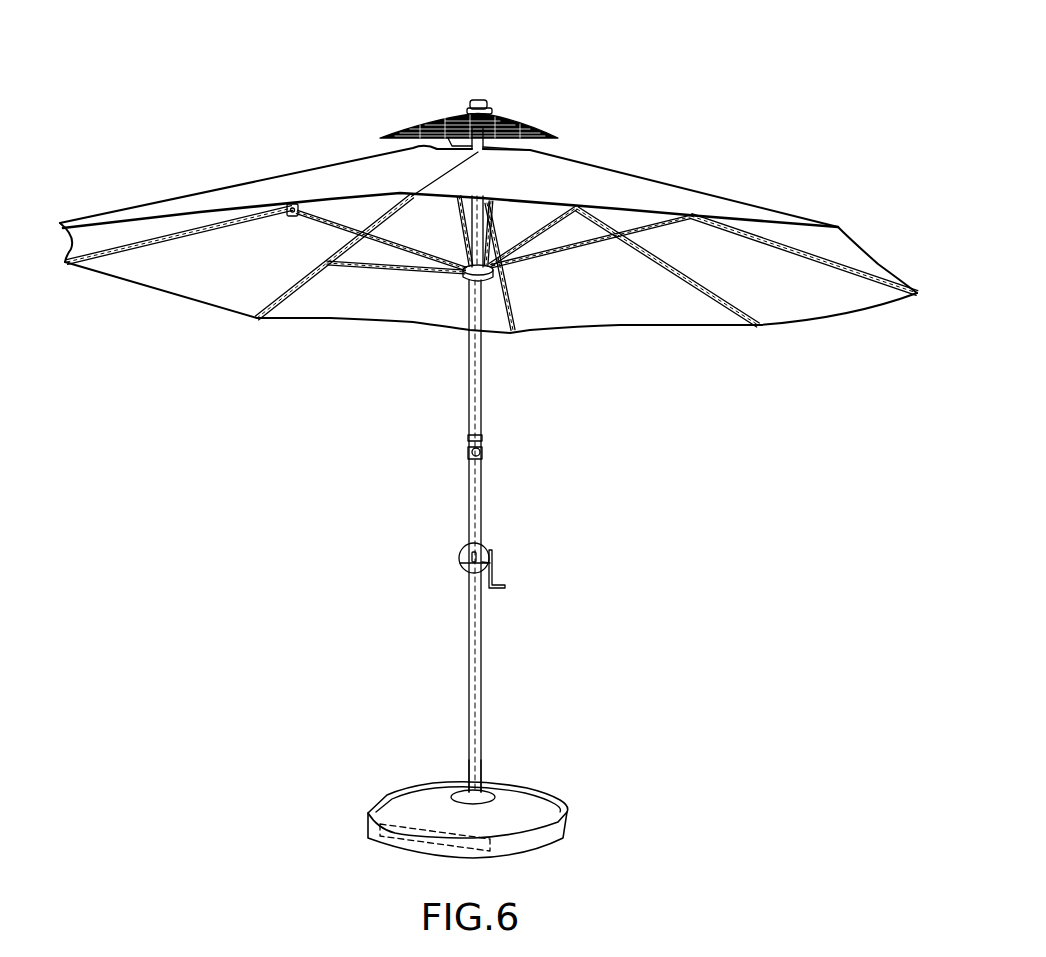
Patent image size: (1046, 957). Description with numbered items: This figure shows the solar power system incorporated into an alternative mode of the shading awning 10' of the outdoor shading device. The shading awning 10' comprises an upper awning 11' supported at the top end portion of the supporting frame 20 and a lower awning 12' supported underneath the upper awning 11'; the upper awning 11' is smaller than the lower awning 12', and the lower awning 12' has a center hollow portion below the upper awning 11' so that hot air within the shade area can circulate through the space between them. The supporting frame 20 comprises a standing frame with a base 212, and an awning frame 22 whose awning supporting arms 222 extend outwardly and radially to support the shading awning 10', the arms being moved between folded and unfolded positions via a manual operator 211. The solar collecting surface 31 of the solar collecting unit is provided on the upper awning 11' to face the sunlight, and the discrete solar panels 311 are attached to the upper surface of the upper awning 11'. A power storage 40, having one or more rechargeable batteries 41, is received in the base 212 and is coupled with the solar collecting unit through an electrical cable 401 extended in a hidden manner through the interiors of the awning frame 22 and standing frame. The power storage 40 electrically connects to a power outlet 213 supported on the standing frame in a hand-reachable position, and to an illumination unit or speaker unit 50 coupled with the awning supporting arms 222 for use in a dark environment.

The shading awning 10' is at (493, 453).
The upper awning 11' is at (488, 204).
The lower awning 12' is at (488, 224).
The supporting frame 20 is at (483, 504).
The manual operator 211 is at (505, 586).
The base 212 is at (567, 812).
The power outlet 213 is at (485, 456).
The awning frame 22 is at (496, 346).
The awning supporting arms 222 is at (303, 290).
The solar collecting surface 31 is at (466, 87).
The discrete solar panels 311 is at (490, 116).
The power storage 40 is at (383, 809).
The electrical cable 401 is at (473, 638).
The rechargeable batteries 41 is at (398, 832).
The illumination unit or speaker unit 50 is at (692, 295).